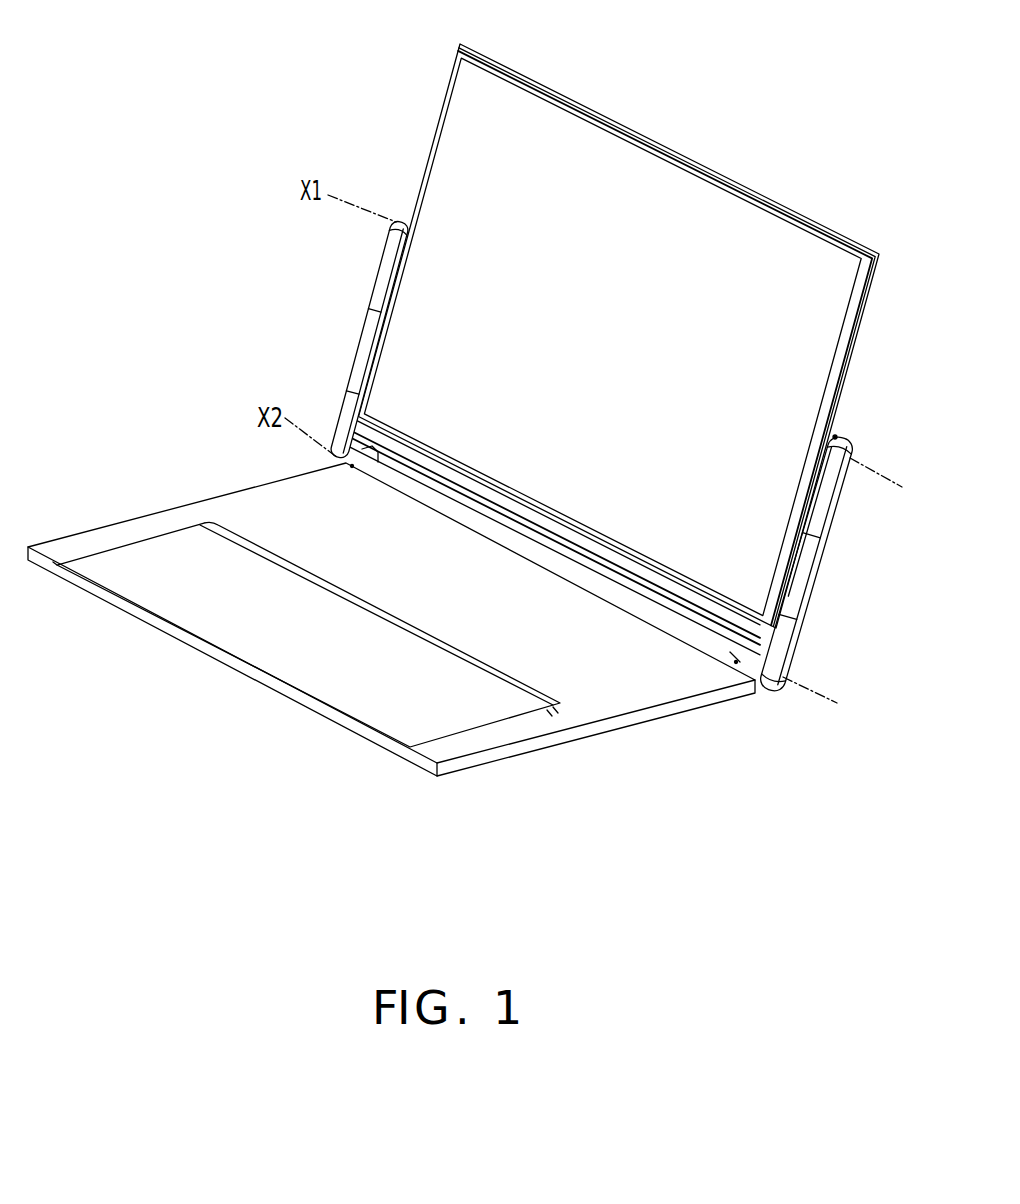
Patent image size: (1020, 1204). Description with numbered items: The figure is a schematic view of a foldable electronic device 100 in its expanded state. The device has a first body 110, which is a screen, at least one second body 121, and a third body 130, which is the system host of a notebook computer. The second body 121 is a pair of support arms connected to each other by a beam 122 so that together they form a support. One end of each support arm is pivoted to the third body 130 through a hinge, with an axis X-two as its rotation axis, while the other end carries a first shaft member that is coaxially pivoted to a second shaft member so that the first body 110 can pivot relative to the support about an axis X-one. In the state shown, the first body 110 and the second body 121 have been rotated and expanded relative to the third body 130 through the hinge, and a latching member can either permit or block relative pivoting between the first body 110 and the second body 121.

The foldable electronic device 100 is at (155, 869).
The first body 110 is at (660, 141).
The second body 121 is at (381, 271).
The beam 122 is at (420, 462).
The third body 130 is at (610, 733).